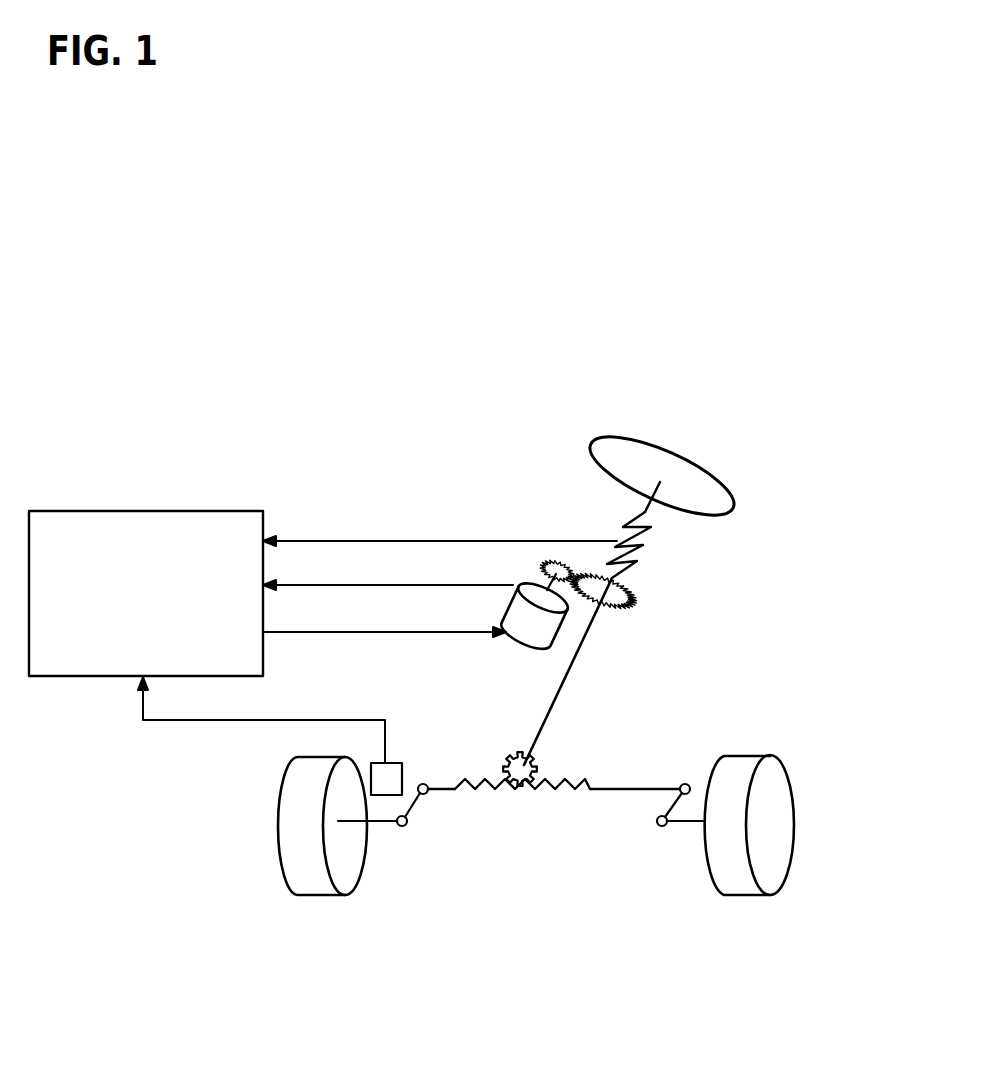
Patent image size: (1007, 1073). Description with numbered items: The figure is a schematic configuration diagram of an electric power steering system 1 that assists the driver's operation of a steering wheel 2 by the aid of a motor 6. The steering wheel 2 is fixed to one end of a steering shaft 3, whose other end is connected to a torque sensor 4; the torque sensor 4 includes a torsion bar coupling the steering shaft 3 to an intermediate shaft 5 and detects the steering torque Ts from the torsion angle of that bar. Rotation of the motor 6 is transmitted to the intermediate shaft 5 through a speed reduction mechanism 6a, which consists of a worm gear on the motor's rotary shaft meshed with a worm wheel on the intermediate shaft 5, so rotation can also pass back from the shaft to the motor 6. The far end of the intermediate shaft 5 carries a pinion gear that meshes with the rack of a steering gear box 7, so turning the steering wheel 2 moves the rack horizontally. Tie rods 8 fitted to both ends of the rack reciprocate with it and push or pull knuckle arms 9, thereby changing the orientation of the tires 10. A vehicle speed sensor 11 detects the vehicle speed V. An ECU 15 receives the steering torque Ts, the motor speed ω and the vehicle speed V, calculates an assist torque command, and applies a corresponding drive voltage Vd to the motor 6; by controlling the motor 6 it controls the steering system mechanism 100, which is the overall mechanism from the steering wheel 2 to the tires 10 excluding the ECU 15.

The electric power steering system 1 is at (677, 362).
The steering system mechanism 100 is at (538, 492).
The steering wheel 2 is at (721, 471).
The steering shaft 3 is at (648, 500).
The torque sensor 4 is at (652, 538).
The intermediate shaft 5 is at (580, 650).
The motor 6 is at (520, 638).
The speed reduction mechanism 6a is at (645, 590).
The steering gear box 7 is at (553, 767).
The tie rods 8 is at (450, 792).
The knuckle arms 9 is at (385, 823).
The tires 10 is at (280, 827).
The vehicle speed sensor 11 is at (398, 763).
The ECU 15 is at (190, 511).